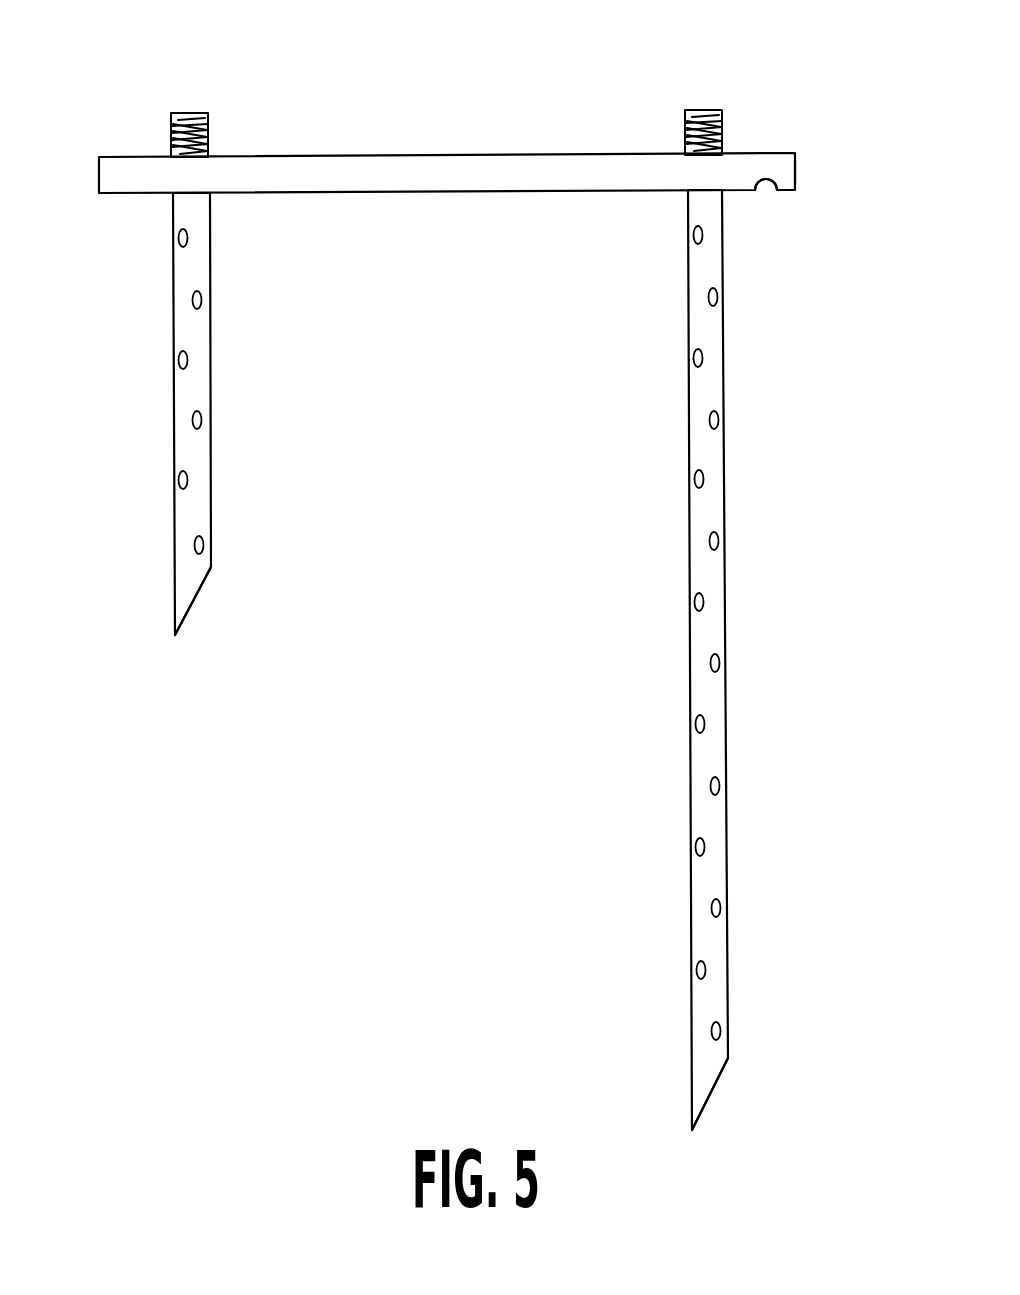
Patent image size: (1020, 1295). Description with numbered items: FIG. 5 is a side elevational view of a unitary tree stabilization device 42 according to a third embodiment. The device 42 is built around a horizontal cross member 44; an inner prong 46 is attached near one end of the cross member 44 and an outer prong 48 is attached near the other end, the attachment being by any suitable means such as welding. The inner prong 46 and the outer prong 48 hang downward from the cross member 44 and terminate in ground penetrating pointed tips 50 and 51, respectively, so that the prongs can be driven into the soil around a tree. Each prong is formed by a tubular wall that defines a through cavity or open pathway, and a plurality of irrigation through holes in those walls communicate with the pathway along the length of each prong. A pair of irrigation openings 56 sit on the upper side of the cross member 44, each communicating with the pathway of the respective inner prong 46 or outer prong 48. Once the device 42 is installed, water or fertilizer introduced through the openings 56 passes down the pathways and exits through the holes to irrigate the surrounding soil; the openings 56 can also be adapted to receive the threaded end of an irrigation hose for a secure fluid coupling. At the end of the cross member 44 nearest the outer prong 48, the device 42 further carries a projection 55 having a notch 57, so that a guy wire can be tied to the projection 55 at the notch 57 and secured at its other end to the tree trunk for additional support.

The tree stabilization device 42 is at (807, 138).
The cross member 44 is at (424, 156).
The inner prong 46 is at (211, 397).
The outer prong 48 is at (727, 388).
The ground penetrating pointed tip 50 is at (190, 612).
The ground penetrating pointed tip 51 is at (707, 1098).
The projection 55 is at (795, 170).
The irrigation openings 56 is at (187, 112).
The notch 57 is at (762, 191).